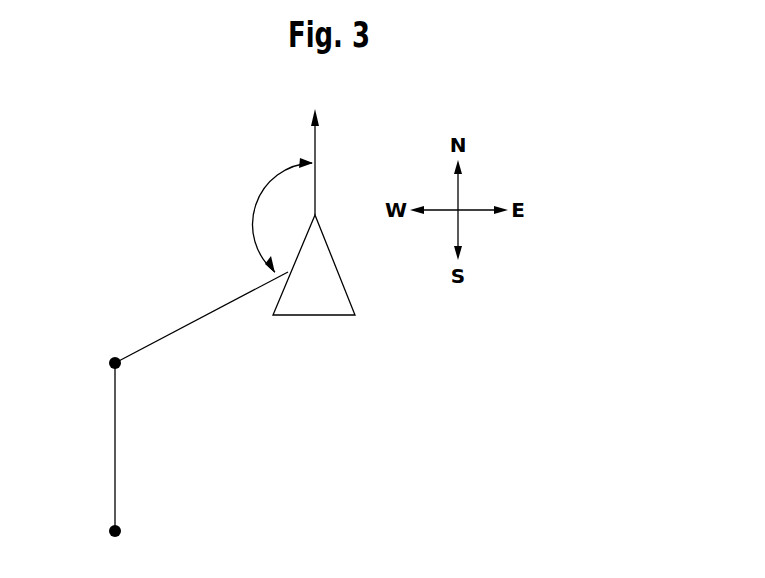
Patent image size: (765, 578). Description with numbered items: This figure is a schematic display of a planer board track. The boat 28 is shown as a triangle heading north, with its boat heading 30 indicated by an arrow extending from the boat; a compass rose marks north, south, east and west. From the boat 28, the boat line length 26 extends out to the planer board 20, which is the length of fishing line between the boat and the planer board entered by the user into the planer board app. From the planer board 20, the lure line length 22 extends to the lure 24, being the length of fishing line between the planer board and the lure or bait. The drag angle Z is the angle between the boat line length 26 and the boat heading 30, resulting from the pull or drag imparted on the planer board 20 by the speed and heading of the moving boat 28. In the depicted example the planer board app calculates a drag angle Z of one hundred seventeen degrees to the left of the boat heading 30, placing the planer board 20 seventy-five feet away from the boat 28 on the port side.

The planer board 20 is at (108, 357).
The lure line length 22 is at (116, 462).
The lure 24 is at (121, 531).
The boat line length 26 is at (173, 333).
The boat 28 is at (325, 302).
The boat heading 30 is at (316, 145).
The drag angle Z is at (253, 208).